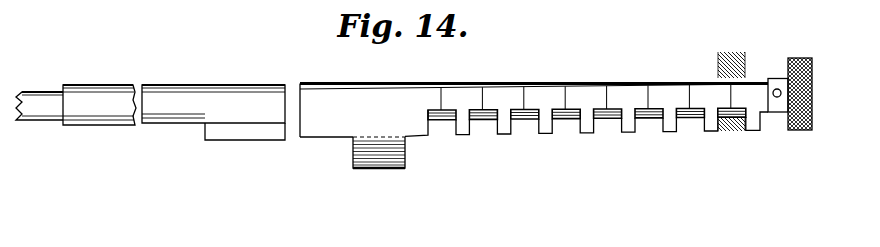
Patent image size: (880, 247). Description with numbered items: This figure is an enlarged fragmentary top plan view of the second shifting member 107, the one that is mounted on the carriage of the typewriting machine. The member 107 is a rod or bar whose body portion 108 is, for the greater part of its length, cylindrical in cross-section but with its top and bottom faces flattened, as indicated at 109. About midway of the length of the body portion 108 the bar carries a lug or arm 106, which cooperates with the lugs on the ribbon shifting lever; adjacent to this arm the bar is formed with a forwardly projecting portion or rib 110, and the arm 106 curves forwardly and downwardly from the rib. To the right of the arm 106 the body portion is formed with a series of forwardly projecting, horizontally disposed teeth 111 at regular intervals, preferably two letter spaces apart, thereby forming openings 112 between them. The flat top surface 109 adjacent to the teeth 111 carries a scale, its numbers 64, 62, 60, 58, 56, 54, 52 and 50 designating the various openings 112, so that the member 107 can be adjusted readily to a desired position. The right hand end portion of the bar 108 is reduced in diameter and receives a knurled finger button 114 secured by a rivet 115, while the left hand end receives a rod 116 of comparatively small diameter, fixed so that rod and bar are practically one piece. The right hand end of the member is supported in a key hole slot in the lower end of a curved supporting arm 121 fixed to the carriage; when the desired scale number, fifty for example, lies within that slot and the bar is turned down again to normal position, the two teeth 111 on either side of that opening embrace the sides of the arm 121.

The scale number 50 is at (732, 101).
The scale number 52 is at (690, 101).
The scale number 54 is at (649, 101).
The scale number 56 is at (608, 102).
The scale number 58 is at (566, 102).
The scale number 60 is at (525, 103).
The scale number 62 is at (483, 103).
The scale number 64 is at (442, 104).
The lug or arm 106 is at (392, 168).
The second shifting member 107 is at (326, 151).
The body portion 108 is at (398, 97).
The flattened top and bottom faces 109 is at (181, 98).
The forwardly projecting portion or rib 110 is at (257, 130).
The teeth 111 is at (502, 130).
The openings 112 is at (563, 125).
The knurled finger button 114 is at (800, 130).
The rivet 115 is at (776, 89).
The rod 116 is at (32, 97).
The curved supporting arm 121 is at (728, 52).